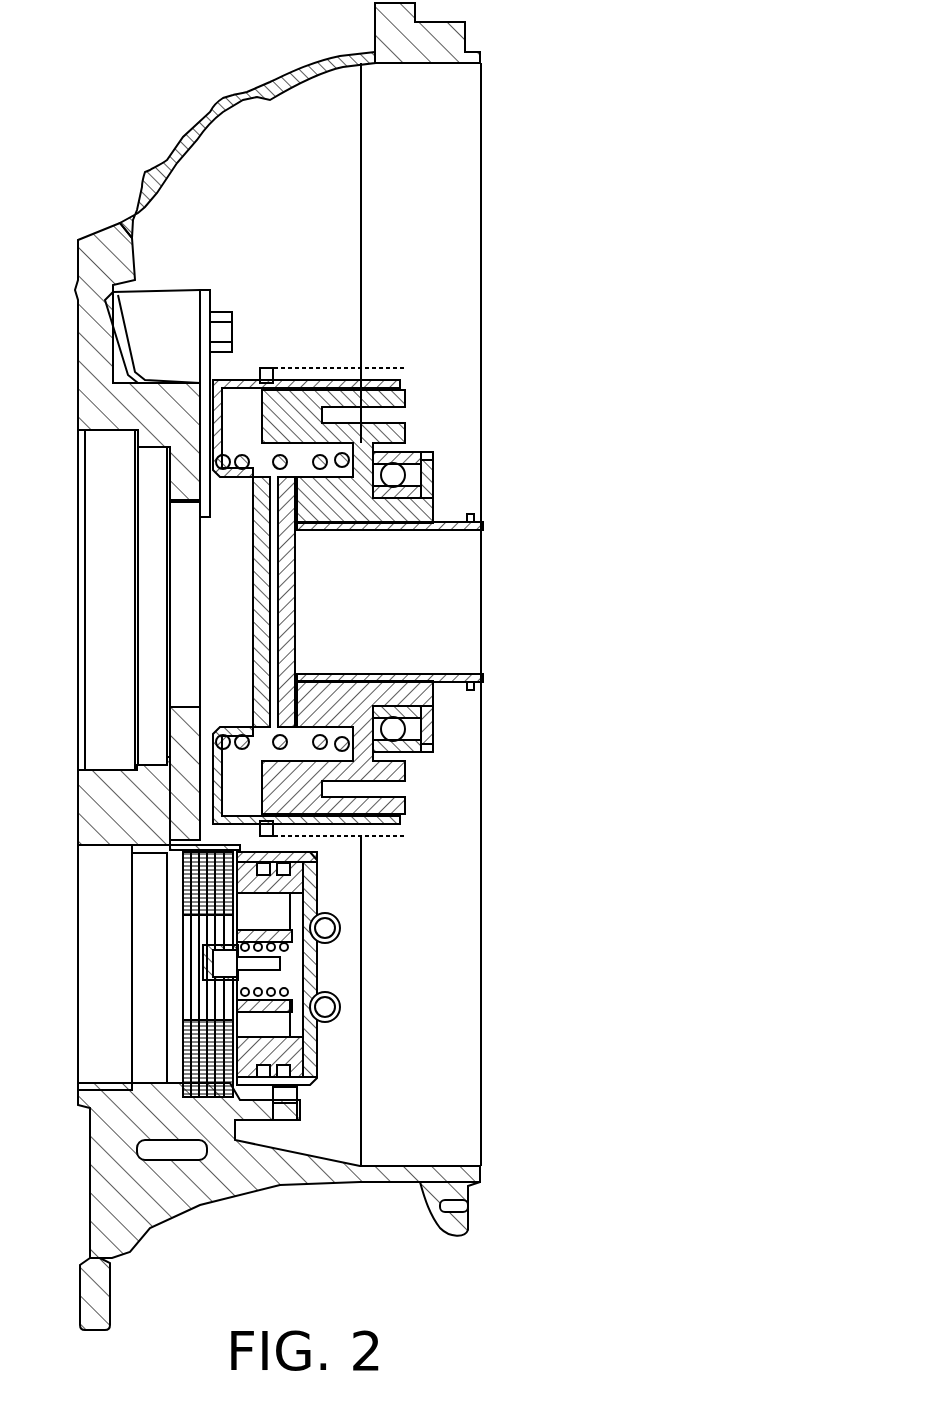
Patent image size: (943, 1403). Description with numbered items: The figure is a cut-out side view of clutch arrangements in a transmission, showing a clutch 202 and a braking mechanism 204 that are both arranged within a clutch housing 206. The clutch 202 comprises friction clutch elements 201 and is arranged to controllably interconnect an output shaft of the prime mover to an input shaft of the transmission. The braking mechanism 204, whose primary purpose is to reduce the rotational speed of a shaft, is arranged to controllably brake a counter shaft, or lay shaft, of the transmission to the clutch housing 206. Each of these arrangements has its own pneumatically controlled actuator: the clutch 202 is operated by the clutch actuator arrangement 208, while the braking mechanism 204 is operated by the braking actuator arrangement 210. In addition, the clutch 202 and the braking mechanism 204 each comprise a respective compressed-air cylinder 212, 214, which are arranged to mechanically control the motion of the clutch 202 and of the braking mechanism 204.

The friction clutch elements 201 is at (297, 607).
The clutch 202 is at (460, 437).
The braking mechanism 204 is at (375, 962).
The clutch housing 206 is at (468, 33).
The clutch actuator arrangement 208 is at (400, 443).
The braking actuator arrangement 210 is at (317, 880).
The compressed-air cylinder 212 is at (400, 500).
The compressed-air cylinder 214 is at (303, 1037).